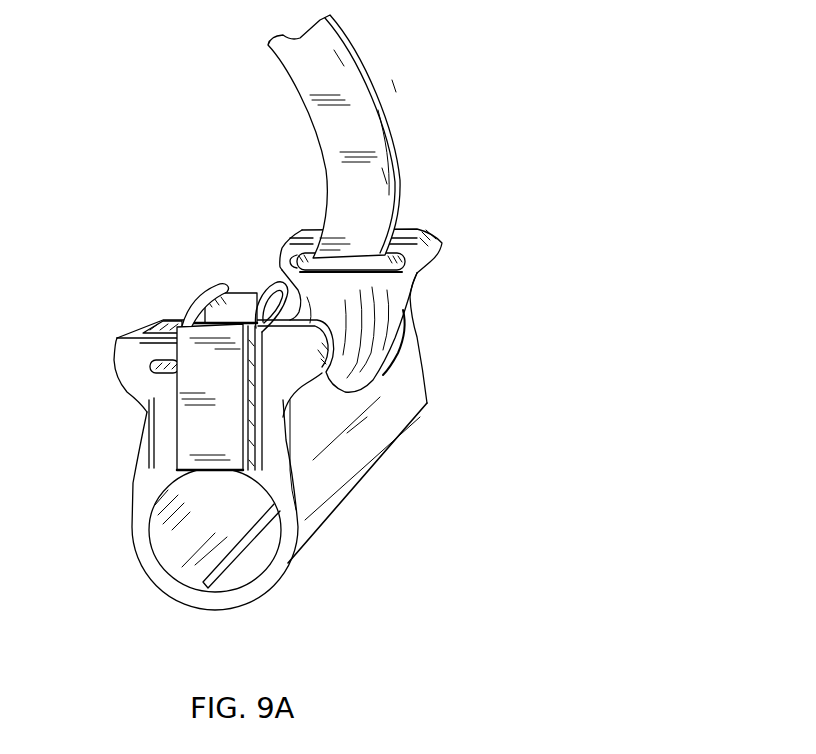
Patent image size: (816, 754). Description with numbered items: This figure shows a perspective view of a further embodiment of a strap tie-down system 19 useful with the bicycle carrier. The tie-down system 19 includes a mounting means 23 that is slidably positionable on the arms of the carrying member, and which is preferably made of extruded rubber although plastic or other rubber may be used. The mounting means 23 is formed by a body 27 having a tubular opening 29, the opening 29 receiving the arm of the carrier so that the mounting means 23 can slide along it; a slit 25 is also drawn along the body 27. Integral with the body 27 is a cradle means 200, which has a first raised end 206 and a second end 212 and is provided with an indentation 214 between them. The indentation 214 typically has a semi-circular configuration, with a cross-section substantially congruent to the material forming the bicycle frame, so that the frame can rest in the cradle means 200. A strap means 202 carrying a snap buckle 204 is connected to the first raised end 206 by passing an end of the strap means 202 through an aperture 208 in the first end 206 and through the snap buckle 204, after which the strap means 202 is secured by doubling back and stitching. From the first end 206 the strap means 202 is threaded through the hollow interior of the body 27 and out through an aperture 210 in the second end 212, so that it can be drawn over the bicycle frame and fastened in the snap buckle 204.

The tie-down system 19 is at (127, 52).
The mounting means 23 is at (403, 549).
The slit 25 is at (220, 578).
The body 27 is at (378, 466).
The tubular opening 29 is at (190, 522).
The cradle means 200 is at (458, 289).
The strap means 202 is at (330, 56).
The snap buckle 204 is at (190, 275).
The first raised end 206 is at (143, 313).
The aperture 208 is at (146, 394).
The aperture 210 is at (296, 261).
The second end 212 is at (462, 221).
The indentation 214 is at (417, 352).